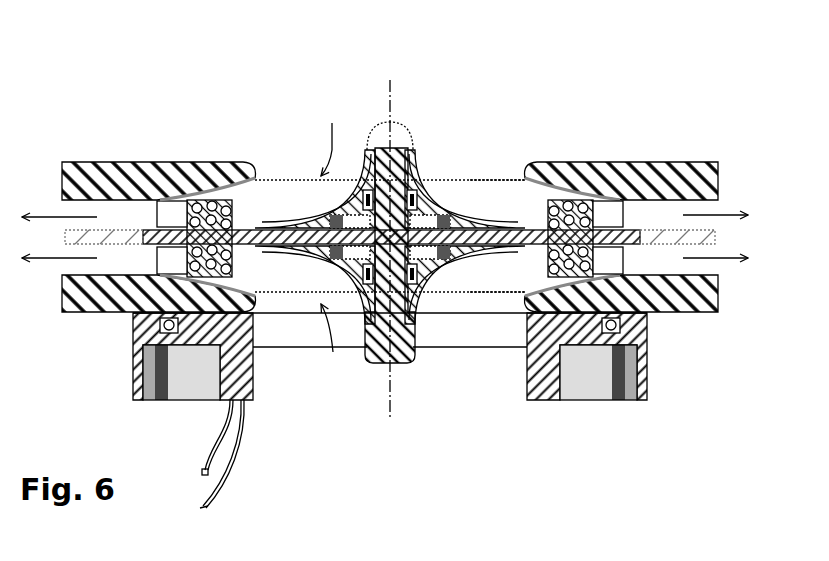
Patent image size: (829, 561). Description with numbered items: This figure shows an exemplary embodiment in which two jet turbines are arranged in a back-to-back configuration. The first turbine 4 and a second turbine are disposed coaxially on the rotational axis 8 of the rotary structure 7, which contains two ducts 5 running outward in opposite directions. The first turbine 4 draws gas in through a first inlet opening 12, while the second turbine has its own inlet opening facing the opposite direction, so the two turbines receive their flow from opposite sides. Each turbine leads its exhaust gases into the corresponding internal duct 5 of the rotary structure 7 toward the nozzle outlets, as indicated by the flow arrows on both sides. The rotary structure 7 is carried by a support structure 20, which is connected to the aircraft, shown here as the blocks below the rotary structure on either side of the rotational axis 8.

The first turbine 4 is at (445, 160).
The duct 5 is at (729, 215).
The rotary structure 7 is at (680, 179).
The rotational axis 8 is at (390, 80).
The first inlet opening 12 is at (499, 173).
The support structure 20 is at (378, 347).